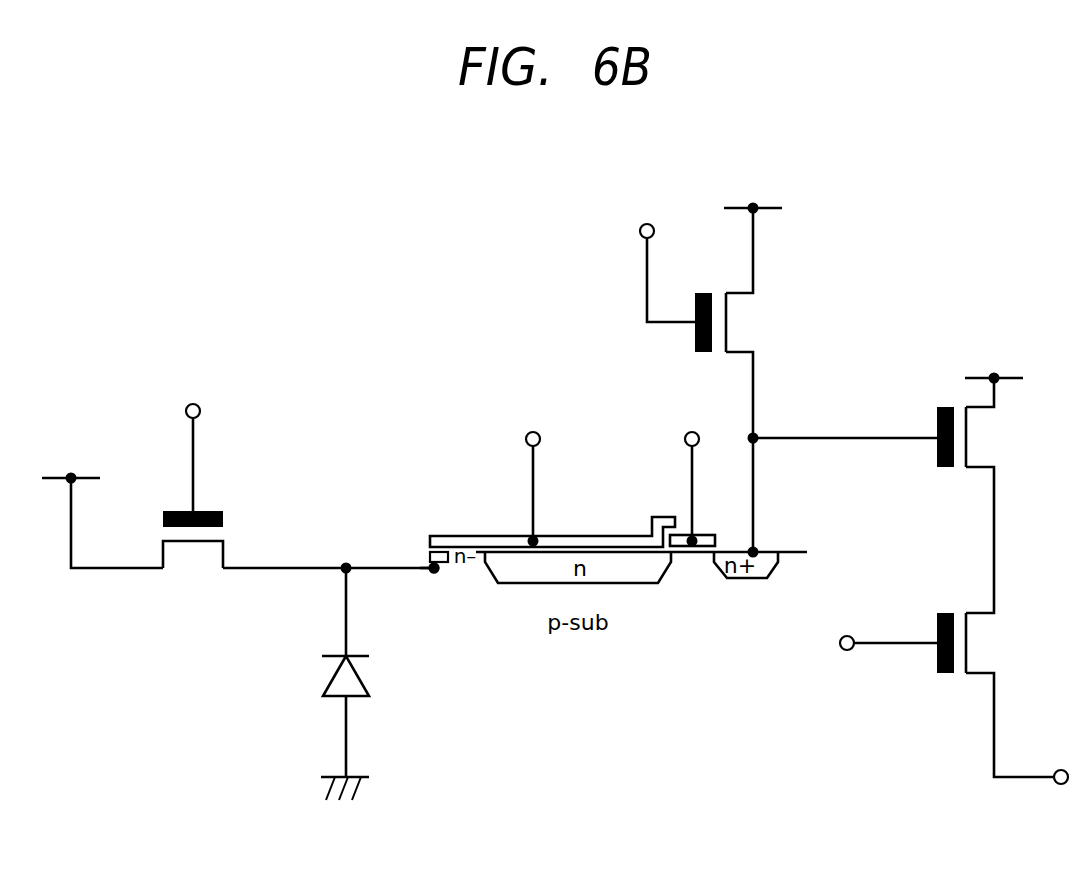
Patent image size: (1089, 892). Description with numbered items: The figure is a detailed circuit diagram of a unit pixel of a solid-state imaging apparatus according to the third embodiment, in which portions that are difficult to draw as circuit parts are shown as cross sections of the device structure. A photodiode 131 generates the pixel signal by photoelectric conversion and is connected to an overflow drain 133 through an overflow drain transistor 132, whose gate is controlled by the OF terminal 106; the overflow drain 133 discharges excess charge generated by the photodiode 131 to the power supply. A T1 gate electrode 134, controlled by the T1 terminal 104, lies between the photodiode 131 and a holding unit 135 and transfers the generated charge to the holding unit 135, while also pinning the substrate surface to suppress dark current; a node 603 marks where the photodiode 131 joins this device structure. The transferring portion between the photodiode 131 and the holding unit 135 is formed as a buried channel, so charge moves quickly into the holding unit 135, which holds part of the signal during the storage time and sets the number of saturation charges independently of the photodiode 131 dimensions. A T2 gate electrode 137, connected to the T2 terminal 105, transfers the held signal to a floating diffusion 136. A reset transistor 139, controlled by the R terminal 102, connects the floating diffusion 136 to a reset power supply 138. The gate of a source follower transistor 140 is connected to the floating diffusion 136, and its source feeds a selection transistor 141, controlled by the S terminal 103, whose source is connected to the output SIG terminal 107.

The R terminal 102 is at (648, 223).
The S terminal 103 is at (847, 652).
The T1 terminal 104 is at (534, 430).
The T2 terminal 105 is at (693, 430).
The OF terminal 106 is at (194, 404).
The output terminal (SIG terminal) 107 is at (1061, 769).
The photodiode 131 is at (331, 676).
The overflow drain transistor 132 is at (191, 552).
The overflow drain 133 is at (72, 472).
The T1 gate electrode 134 is at (453, 537).
The holding unit 135 is at (637, 581).
The floating diffusion 136 is at (757, 579).
The T2 gate electrode 137 is at (703, 535).
The reset power supply 138 is at (754, 202).
The reset transistor 139 is at (738, 323).
The source follower transistor 140 is at (979, 437).
The selection transistor 141 is at (979, 643).
The connection node of photodiode to charge holding portion 603 is at (437, 575).